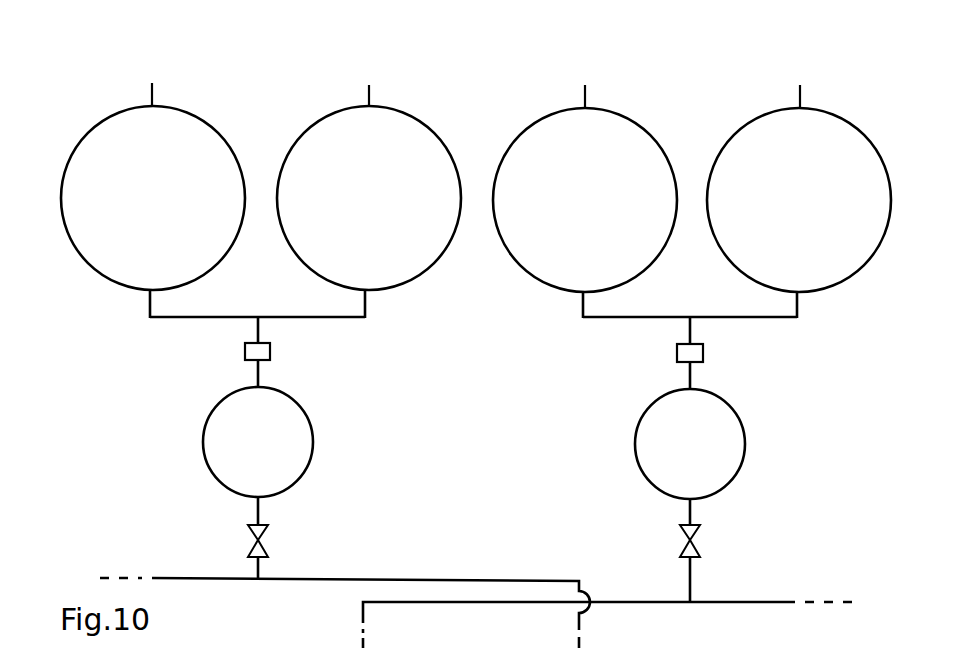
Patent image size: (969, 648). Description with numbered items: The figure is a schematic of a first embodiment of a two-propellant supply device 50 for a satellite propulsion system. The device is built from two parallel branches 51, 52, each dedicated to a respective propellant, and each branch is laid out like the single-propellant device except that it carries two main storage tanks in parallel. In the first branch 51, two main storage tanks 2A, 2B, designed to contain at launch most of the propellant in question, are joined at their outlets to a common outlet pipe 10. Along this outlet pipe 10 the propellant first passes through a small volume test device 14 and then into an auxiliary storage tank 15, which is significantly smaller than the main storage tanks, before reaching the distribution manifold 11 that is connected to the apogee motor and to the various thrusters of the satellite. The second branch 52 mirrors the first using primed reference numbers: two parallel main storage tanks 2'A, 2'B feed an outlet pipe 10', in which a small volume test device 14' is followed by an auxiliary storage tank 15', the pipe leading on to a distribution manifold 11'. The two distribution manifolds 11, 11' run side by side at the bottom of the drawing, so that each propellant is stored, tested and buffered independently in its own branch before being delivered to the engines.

The main storage tank 2A is at (180, 107).
The main storage tank 2B is at (403, 107).
The main storage tank 2'A is at (603, 201).
The main storage tank 2'B is at (807, 193).
The outlet pipe 10 is at (274, 339).
The outlet pipe 10' is at (702, 352).
The small volume test device 14 is at (290, 365).
The small volume test device 14' is at (655, 368).
The auxiliary storage tank 15 is at (302, 483).
The auxiliary storage tank 15' is at (729, 495).
The distribution manifold 11 is at (345, 587).
The distribution manifold 11' is at (608, 597).
The two-propellant supply device 50 is at (258, 333).
The branch 51 is at (261, 165).
The branch 52 is at (693, 165).